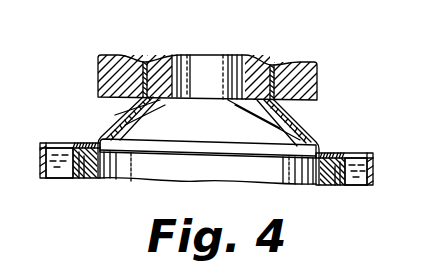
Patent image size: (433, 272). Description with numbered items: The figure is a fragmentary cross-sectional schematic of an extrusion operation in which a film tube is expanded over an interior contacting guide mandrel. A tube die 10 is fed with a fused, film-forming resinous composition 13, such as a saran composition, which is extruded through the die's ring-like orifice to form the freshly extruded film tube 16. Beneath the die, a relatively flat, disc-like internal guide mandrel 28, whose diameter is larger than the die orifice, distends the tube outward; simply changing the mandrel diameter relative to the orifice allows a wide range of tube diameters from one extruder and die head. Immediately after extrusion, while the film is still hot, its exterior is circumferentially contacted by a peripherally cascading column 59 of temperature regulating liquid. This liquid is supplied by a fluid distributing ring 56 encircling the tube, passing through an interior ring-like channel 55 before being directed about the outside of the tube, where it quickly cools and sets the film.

The tube die 10 is at (98, 77).
The film-forming resinous composition 13 is at (145, 62).
The freshly extruded film tube 16 is at (118, 118).
The internal guide mandrel 28 is at (200, 145).
The ring-like channel 55 is at (61, 169).
The fluid distributing ring 56 is at (48, 143).
The cascading column of temperature regulating liquid 59 is at (95, 178).